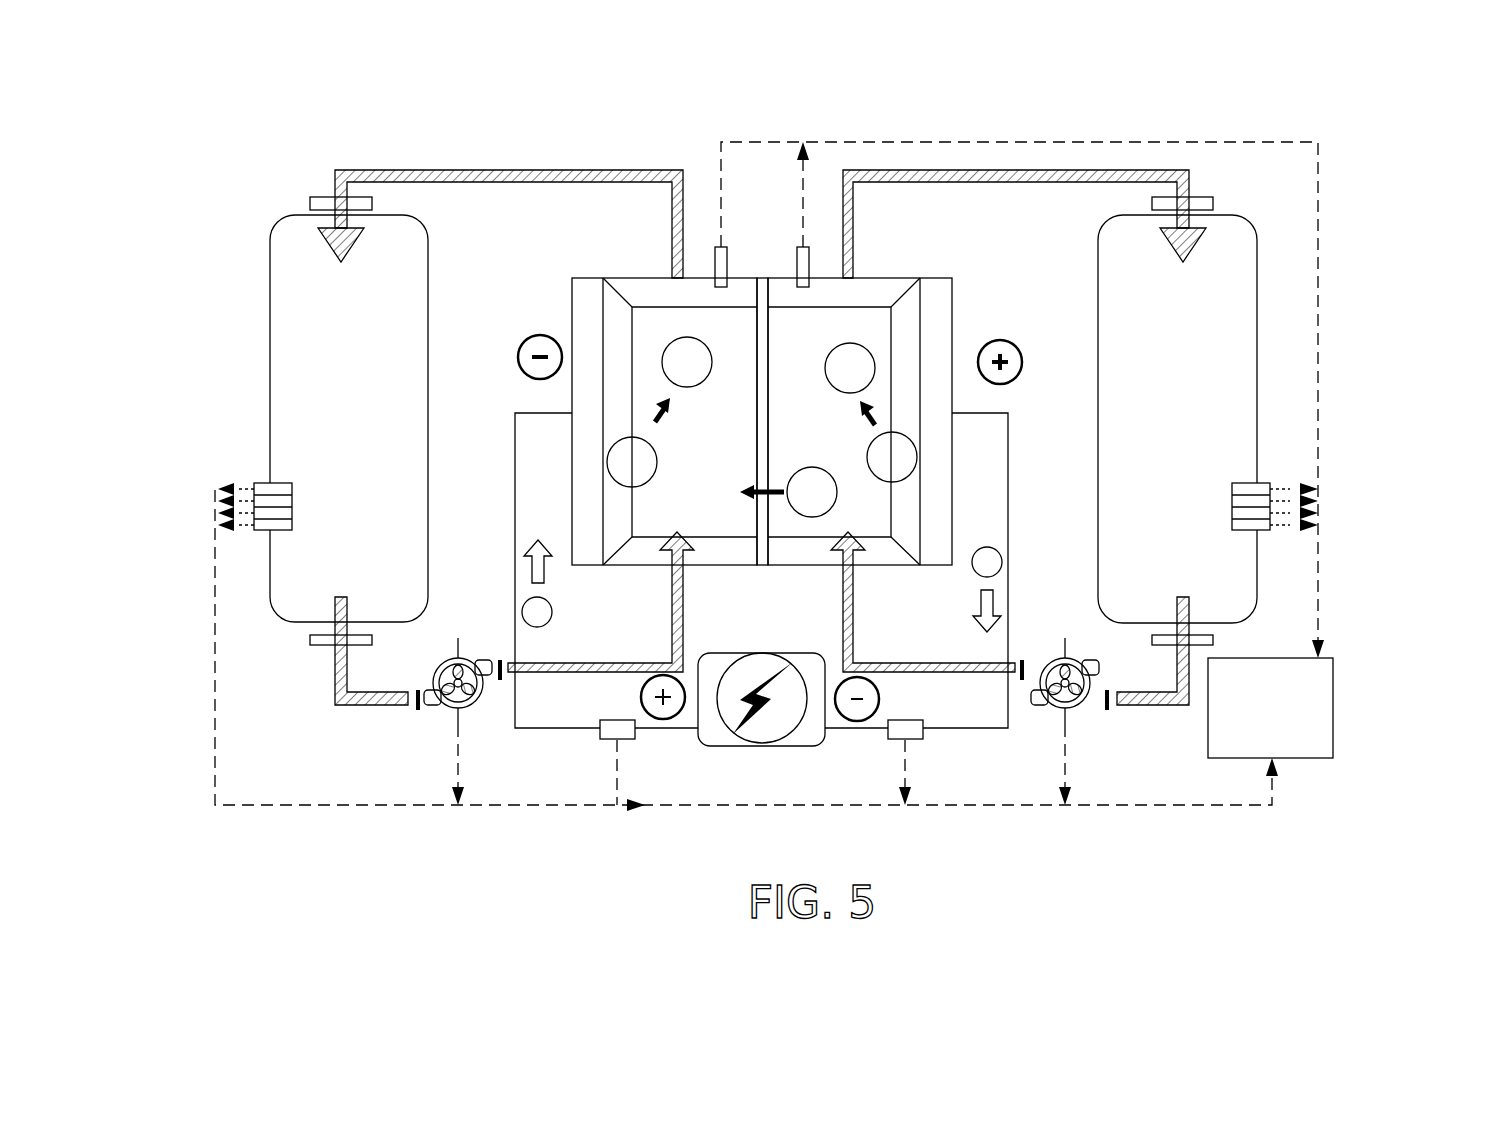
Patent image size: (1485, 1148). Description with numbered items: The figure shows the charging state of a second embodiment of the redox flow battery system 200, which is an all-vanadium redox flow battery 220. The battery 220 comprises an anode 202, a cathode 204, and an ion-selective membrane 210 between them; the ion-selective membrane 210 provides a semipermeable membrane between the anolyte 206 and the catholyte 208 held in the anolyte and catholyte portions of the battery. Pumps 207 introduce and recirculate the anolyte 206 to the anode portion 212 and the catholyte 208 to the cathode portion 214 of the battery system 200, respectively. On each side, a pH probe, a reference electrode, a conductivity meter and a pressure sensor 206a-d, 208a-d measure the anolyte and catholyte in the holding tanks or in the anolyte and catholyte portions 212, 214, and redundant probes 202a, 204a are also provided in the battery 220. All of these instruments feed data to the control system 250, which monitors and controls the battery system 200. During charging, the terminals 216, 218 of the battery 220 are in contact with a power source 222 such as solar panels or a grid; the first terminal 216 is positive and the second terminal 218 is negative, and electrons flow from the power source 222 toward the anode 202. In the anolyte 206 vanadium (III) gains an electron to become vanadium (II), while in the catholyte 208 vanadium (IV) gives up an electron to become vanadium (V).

The redox flow battery system 200 is at (515, 140).
The anode 202 is at (585, 285).
The redundant probe 202a is at (716, 247).
The cathode 204 is at (940, 320).
The redundant probe 204a is at (808, 247).
The anolyte 206 is at (270, 270).
The pH probe, reference electrode, conductivity meter and pressure sensor 206a-d is at (222, 468).
The pump 207 is at (762, 664).
The catholyte 208 is at (1225, 215).
The pH probe, reference electrode, conductivity meter and pressure sensor 208a-d is at (1340, 478).
The ion-selective membrane 210 is at (766, 278).
The anode portion 212 is at (656, 325).
The cathode portion 214 is at (870, 325).
The first terminal 216 is at (597, 745).
The second terminal 218 is at (930, 745).
The all-vanadium redox flow battery 220 is at (520, 400).
The power source 222 is at (755, 650).
The control system 250 is at (1282, 658).